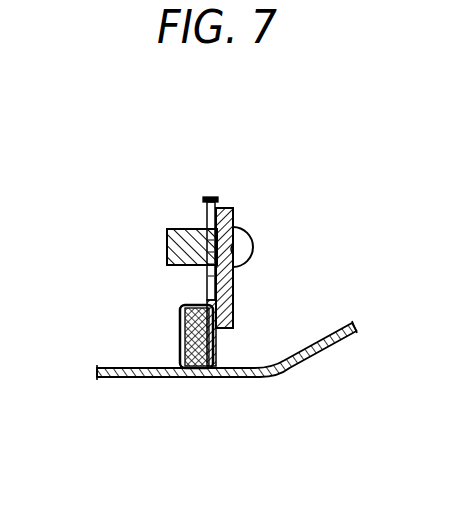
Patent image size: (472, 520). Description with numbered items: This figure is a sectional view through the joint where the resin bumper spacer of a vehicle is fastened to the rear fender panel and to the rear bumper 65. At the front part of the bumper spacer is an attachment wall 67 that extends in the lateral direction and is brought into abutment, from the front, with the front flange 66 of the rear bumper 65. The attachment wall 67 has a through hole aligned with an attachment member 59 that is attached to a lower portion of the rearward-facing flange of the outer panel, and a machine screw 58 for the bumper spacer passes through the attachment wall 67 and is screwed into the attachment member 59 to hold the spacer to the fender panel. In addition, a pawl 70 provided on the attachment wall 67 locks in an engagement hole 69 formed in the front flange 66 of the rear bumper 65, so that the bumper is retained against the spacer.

The machine screw 58 is at (250, 240).
The attachment member 59 is at (167, 240).
The rear bumper 65 is at (325, 353).
The front flange 66 is at (183, 305).
The attachment wall 67 is at (207, 216).
The engagement hole 69 is at (180, 340).
The pawl 70 is at (233, 338).